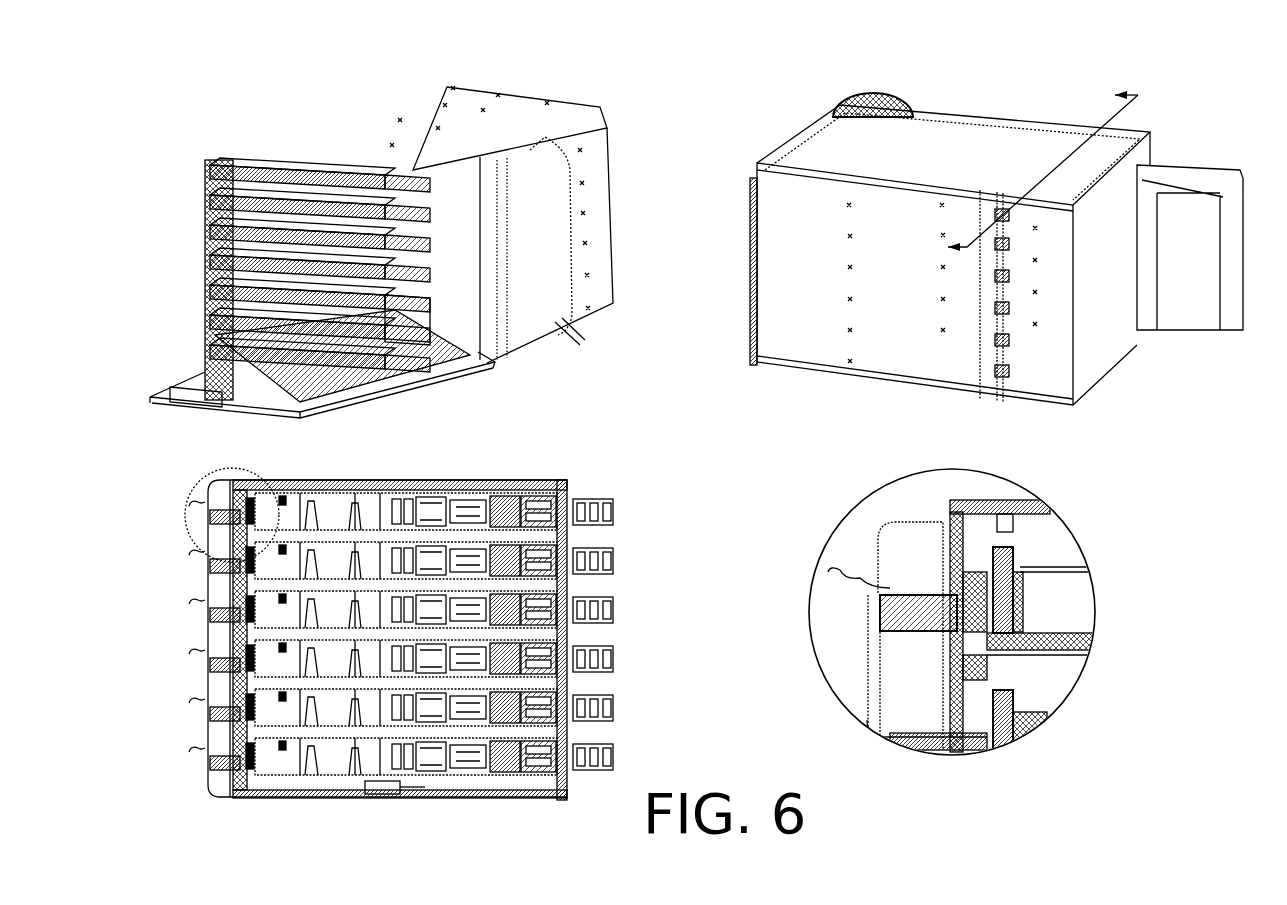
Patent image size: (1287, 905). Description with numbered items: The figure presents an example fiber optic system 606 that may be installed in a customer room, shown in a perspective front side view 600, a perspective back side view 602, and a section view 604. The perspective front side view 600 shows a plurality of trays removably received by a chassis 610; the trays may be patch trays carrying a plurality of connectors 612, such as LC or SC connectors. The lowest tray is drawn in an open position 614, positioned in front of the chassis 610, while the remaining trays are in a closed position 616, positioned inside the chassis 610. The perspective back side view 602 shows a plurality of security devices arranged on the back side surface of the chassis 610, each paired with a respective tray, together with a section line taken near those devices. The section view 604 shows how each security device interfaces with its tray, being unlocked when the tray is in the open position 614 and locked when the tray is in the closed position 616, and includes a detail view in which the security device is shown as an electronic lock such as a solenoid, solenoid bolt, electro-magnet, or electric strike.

The perspective front side view 600 is at (620, 417).
The perspective back side view 602 is at (1257, 425).
The section view 604 is at (617, 807).
The fiber optic system 606 is at (202, 123).
The chassis 610 is at (333, 132).
The connectors 612 is at (247, 378).
The open position 614 is at (362, 395).
The closed position 616 is at (400, 317).